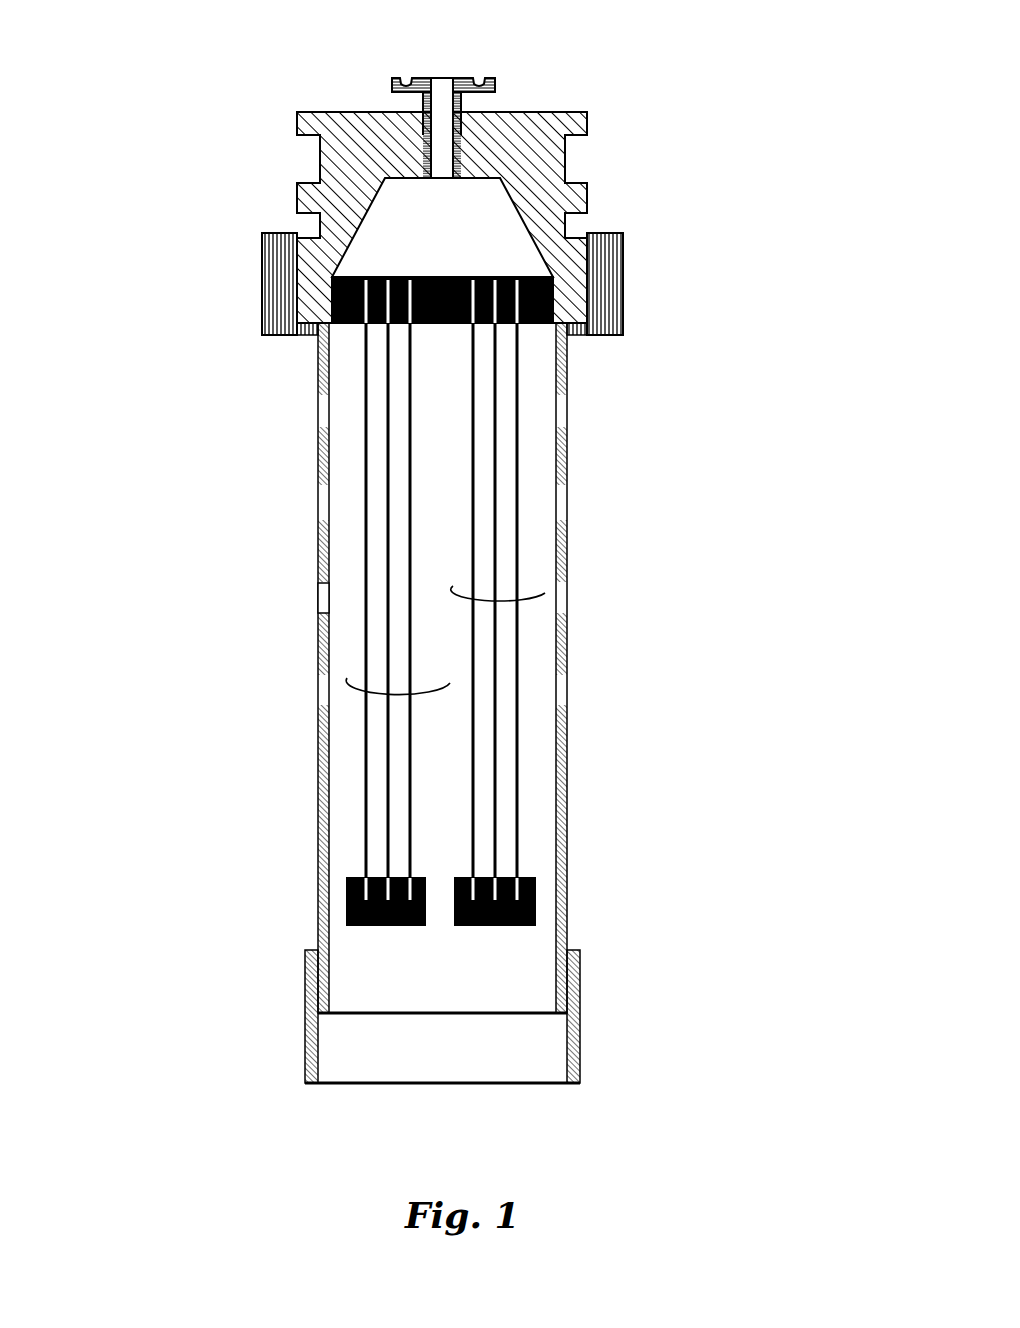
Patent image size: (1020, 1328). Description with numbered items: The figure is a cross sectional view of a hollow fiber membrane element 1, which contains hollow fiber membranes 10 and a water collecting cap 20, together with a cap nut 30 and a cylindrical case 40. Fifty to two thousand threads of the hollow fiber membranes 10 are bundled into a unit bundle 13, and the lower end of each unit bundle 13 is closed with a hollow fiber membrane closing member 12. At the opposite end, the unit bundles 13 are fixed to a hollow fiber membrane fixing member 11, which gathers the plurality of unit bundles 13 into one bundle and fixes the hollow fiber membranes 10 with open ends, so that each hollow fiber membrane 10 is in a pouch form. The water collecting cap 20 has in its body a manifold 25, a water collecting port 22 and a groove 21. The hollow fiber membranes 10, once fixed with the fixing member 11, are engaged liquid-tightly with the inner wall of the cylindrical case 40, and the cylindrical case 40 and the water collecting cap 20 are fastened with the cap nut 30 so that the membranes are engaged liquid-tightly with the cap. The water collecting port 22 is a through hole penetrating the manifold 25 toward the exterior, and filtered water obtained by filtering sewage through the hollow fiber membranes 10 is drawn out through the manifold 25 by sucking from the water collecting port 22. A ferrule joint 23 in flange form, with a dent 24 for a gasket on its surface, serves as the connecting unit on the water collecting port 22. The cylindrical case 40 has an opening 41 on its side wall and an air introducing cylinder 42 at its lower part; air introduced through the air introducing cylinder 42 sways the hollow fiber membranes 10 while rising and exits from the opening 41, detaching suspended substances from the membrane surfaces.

The hollow fiber membrane element 1 is at (210, 108).
The hollow fiber membranes 10 is at (518, 733).
The hollow fiber membrane fixing member 11 is at (530, 334).
The hollow fiber membrane closing member 12 is at (535, 910).
The unit bundle 13 is at (545, 592).
The water collecting cap 20 is at (533, 110).
The groove 21 is at (565, 167).
The water collecting port 22 is at (436, 77).
The ferrule joint 23 is at (393, 78).
The dent for a gasket 24 is at (473, 78).
The manifold 25 is at (475, 235).
The cap nut 30 is at (257, 296).
The cylindrical case 40 is at (317, 453).
The opening 41 is at (322, 590).
The air introducing cylinder 42 is at (300, 1015).